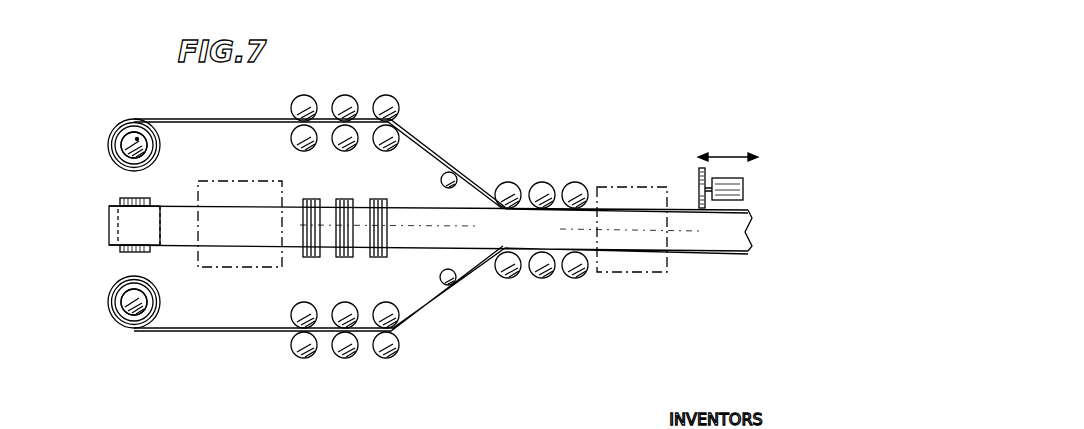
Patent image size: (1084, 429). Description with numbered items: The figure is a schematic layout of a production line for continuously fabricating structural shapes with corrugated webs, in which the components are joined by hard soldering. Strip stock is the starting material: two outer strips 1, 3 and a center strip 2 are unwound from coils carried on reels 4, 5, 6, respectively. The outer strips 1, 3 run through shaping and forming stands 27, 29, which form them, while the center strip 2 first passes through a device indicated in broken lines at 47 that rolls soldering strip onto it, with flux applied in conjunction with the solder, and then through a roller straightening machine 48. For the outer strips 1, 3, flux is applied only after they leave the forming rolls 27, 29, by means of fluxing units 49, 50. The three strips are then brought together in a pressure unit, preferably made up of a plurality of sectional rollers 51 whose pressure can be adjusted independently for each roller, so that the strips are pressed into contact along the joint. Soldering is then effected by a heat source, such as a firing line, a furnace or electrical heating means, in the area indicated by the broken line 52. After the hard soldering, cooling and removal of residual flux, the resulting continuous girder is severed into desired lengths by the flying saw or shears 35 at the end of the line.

The outer strip coil 1 is at (110, 136).
The center strip coil 2 is at (109, 221).
The outer strip coil 3 is at (116, 316).
The reel 4 is at (137, 139).
The reel 5 is at (132, 252).
The reel 6 is at (150, 291).
The shaping and forming stand 27 is at (338, 85).
The shaping and forming stand 29 is at (337, 365).
The flying saw or shears 35 is at (699, 198).
The solder strip rolling device 47 is at (236, 257).
The roller straightening machine 48 is at (374, 258).
The fluxing unit 49 is at (441, 177).
The fluxing unit 50 is at (440, 277).
The pressure rollers 51 is at (537, 282).
The heating area 52 is at (634, 262).